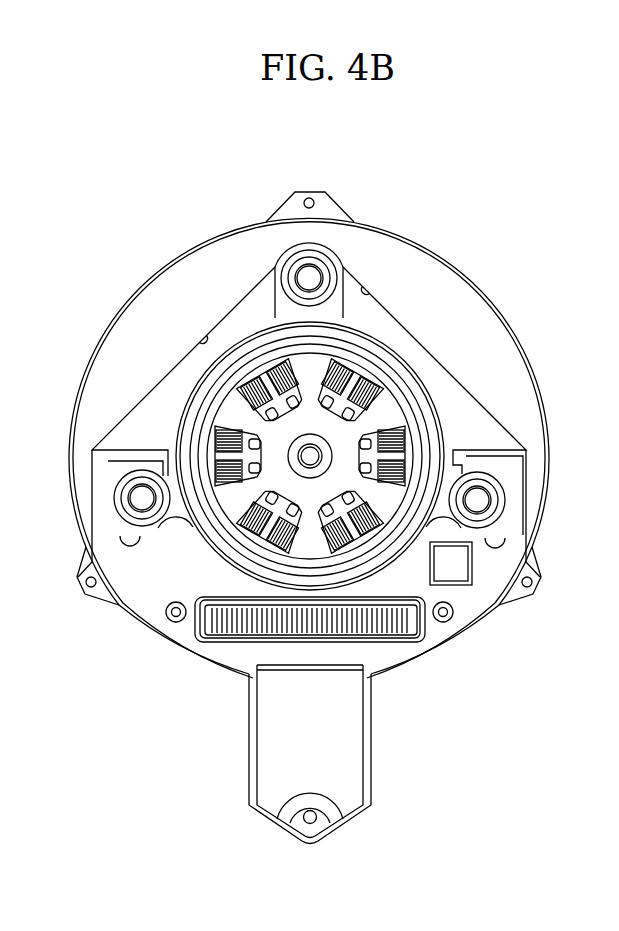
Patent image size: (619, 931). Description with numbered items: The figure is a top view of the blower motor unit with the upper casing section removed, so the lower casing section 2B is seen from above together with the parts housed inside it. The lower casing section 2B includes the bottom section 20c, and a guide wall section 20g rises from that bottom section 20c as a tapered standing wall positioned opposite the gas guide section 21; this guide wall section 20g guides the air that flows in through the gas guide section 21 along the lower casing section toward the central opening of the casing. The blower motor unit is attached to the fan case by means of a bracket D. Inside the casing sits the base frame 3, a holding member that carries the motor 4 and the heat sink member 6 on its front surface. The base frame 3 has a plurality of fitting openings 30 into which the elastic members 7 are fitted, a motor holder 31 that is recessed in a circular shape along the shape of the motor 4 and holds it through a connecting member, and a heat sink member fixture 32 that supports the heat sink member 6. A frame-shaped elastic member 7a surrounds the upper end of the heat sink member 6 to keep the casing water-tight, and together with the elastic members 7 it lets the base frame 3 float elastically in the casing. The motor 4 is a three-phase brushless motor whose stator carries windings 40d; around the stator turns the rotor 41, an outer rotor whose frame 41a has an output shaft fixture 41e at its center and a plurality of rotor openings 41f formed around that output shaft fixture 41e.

The lower casing section 2B is at (217, 206).
The bracket D is at (309, 191).
The elastic members 7 is at (297, 257).
The fitting openings 30 is at (313, 265).
The guide wall section 20g is at (366, 290).
The rotor openings 41f is at (367, 403).
The rotor 41 is at (250, 357).
The bottom section 20c is at (450, 383).
The windings 40d is at (248, 353).
The output shaft fixture 41e is at (323, 462).
The base frame 3 is at (160, 435).
The motor 4 is at (471, 549).
The frame 41a is at (213, 530).
The motor holder 31 is at (426, 532).
The heat sink member fixture 32 is at (170, 622).
The heat sink member 6 is at (403, 645).
The frame-shaped elastic member 7a is at (268, 641).
The gas guide section 21 is at (373, 770).